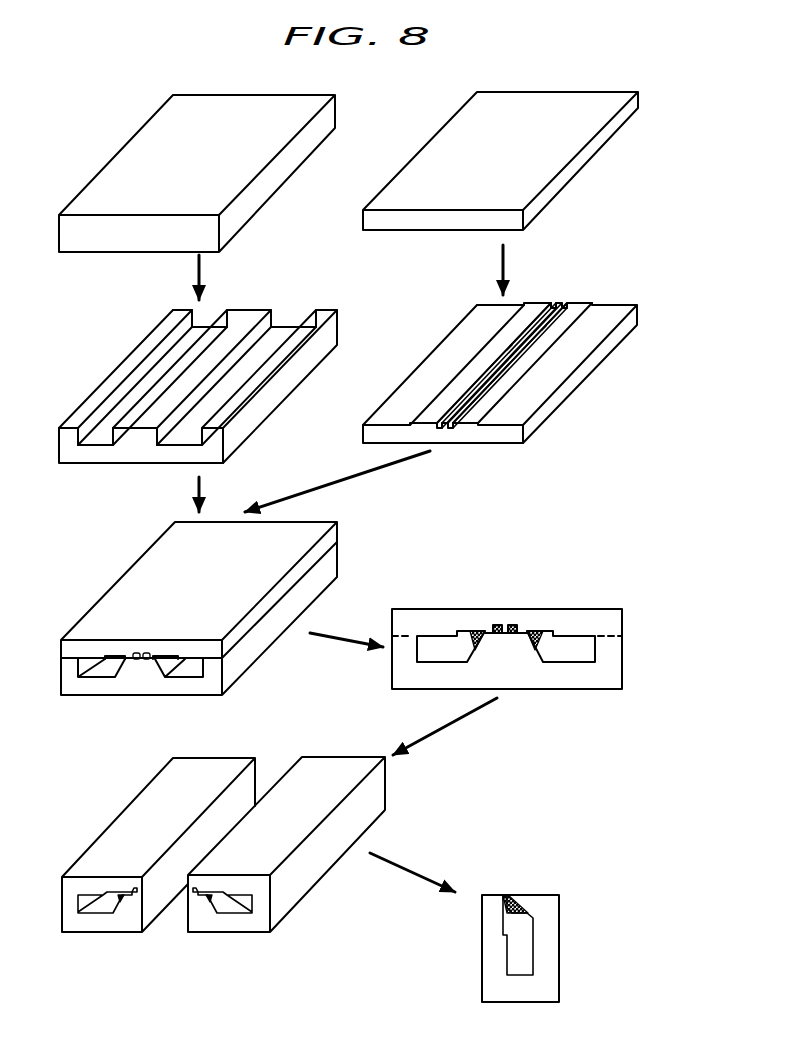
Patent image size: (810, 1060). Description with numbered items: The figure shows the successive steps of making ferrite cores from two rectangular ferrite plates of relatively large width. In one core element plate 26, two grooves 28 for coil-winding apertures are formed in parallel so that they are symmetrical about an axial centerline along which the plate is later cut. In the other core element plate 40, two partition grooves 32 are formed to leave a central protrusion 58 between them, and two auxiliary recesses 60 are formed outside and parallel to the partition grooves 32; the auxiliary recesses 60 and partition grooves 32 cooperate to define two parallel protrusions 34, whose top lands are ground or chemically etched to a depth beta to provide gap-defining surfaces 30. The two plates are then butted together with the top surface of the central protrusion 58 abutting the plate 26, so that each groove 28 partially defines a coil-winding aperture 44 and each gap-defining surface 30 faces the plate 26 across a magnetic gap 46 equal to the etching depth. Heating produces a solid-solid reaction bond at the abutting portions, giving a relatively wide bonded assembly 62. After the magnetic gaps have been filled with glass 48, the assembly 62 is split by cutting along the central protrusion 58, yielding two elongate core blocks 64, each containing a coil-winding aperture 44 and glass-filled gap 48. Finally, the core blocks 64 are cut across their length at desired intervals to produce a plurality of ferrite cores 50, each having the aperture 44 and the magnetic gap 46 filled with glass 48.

The core element plate 26 is at (98, 160).
The groove 28 is at (145, 390).
The gap-defining surface 30 is at (507, 350).
The partition groove 32 is at (437, 432).
The protrusion 34 is at (552, 305).
The core element plate 40 is at (606, 160).
The coil-winding aperture 44 is at (93, 908).
The magnetic gap 46 is at (507, 883).
The glass 48 is at (480, 630).
The ferrite core 50 is at (570, 900).
The central protrusion 58 is at (558, 305).
The auxiliary recess 60 is at (460, 387).
The bonded assembly 62 is at (551, 700).
The core block 64 is at (110, 804).